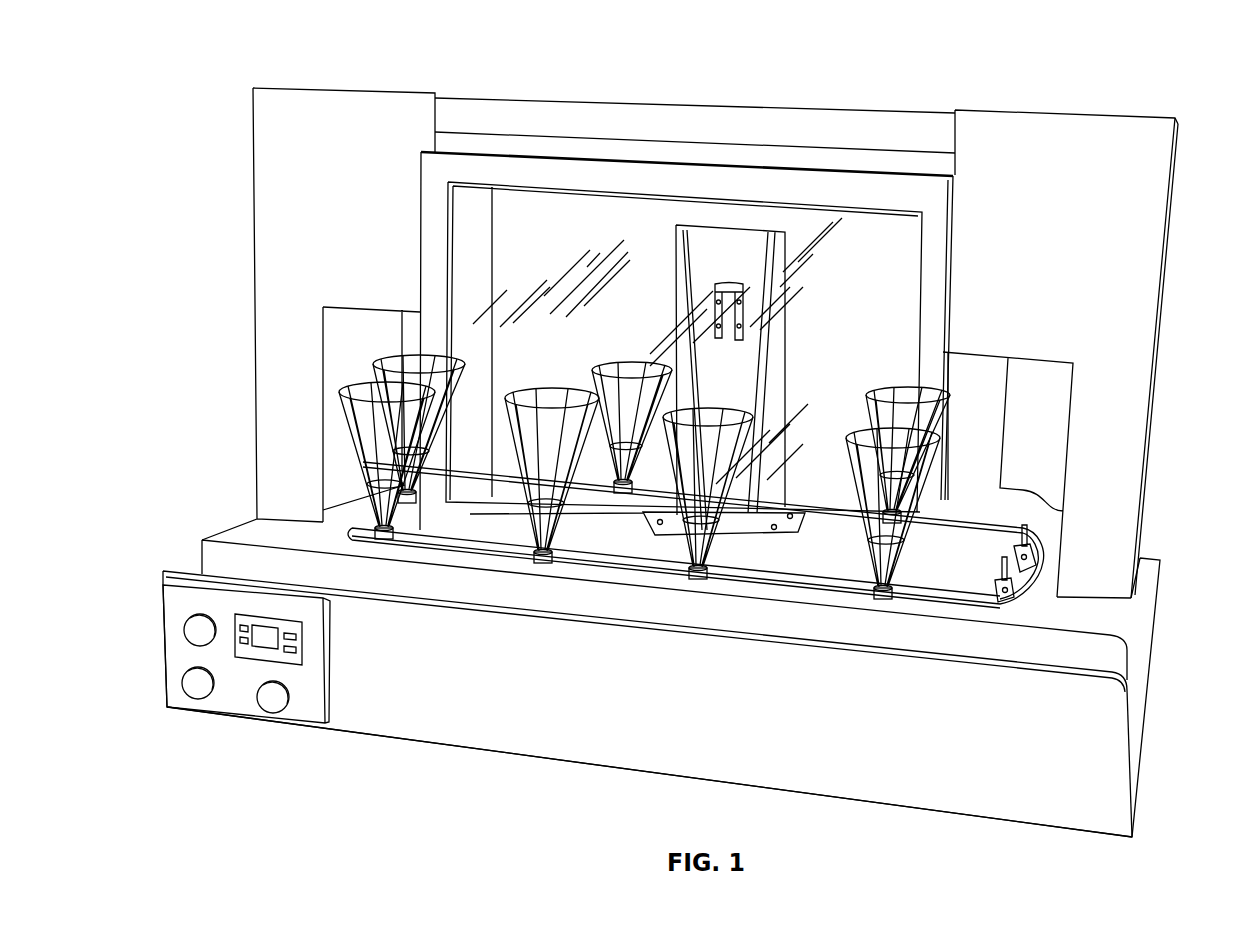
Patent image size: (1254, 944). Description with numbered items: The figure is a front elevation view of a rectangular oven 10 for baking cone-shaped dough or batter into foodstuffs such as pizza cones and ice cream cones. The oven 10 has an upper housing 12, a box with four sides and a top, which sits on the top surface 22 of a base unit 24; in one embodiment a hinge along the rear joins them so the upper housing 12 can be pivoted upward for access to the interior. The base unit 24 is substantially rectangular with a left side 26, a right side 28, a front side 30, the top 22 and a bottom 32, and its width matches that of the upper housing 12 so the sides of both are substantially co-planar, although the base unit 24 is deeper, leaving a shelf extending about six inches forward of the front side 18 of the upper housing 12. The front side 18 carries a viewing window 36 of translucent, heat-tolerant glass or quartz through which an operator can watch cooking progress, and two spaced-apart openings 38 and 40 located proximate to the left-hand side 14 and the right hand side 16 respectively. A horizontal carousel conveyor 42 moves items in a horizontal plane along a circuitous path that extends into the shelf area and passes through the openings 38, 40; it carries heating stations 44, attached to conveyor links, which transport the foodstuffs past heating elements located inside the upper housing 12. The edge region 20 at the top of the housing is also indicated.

The oven 10 is at (175, 78).
The upper housing 12 is at (230, 212).
The left-hand side 14 is at (253, 312).
The right hand side 16 is at (1160, 414).
The front side 18 is at (293, 371).
The top edge of housing 20 is at (1106, 106).
The top surface 22 is at (232, 540).
The base unit 24 is at (163, 612).
The left side 26 is at (157, 659).
The right side 28 is at (1150, 730).
The front side 30 is at (632, 702).
The bottom 32 is at (1100, 843).
The viewing window 36 is at (837, 309).
The opening 38 is at (368, 306).
The opening 40 is at (1045, 356).
The horizontal carousel conveyor 42 is at (1018, 594).
The heating stations 44 is at (352, 440).